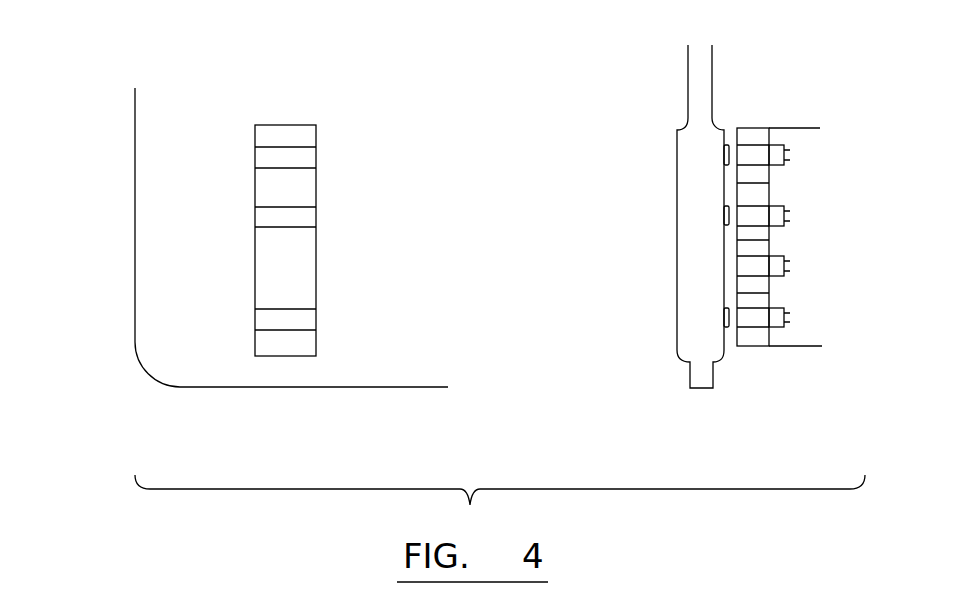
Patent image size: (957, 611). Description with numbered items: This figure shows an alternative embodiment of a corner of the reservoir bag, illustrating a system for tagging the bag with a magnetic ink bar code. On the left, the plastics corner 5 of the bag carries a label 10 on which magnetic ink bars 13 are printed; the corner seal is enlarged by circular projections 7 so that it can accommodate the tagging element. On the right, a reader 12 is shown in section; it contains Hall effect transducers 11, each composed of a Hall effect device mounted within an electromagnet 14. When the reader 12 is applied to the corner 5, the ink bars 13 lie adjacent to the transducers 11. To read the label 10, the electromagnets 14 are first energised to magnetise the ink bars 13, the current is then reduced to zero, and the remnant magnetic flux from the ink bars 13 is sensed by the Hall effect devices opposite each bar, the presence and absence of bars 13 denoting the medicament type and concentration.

The plastics corner 5 is at (168, 128).
The circular projections 7 is at (676, 155).
The label 10 is at (300, 265).
The Hall effect transducers 11 is at (787, 210).
The reader 12 is at (810, 125).
The magnetic ink bars 13 is at (267, 320).
The electromagnets 14 is at (757, 127).